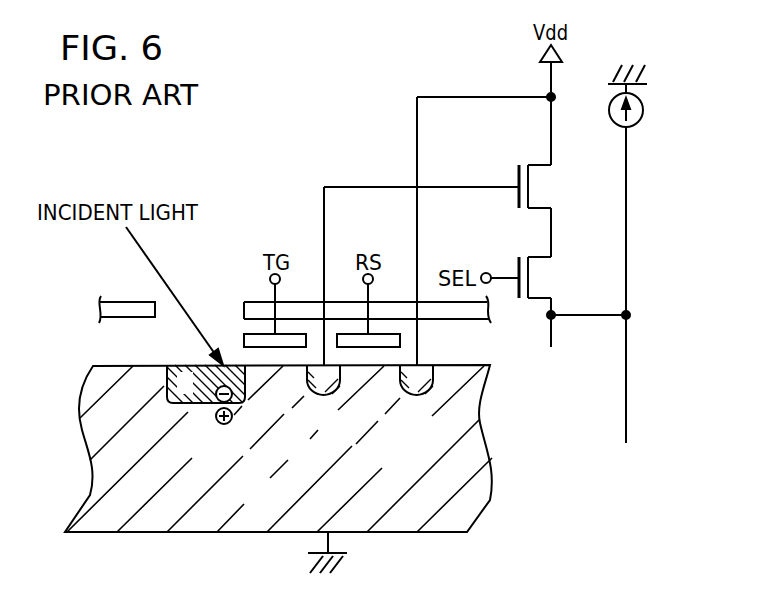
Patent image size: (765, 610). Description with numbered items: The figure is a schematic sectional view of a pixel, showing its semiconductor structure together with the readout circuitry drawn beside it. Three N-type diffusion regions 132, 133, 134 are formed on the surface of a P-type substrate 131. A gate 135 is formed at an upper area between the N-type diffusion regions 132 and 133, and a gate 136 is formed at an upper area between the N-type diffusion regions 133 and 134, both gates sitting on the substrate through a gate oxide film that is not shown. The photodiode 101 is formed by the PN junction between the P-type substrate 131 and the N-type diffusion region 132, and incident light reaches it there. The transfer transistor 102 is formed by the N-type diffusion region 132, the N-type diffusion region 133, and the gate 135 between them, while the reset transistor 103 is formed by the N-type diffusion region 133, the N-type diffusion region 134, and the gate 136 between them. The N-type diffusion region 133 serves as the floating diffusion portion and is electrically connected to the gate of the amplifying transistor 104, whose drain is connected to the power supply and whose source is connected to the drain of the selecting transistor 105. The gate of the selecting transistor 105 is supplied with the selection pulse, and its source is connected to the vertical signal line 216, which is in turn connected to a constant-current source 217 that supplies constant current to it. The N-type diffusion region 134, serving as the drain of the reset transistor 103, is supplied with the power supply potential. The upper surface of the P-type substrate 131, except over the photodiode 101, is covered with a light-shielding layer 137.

The photodiode 101 is at (240, 444).
The transfer transistor 102 is at (285, 408).
The reset transistor 103 is at (375, 408).
The amplifying transistor 104 is at (540, 189).
The selecting transistor 105 is at (540, 278).
The P-type substrate 131 is at (392, 533).
The N-type diffusion region 132 is at (190, 404).
The N-type diffusion region 133 is at (328, 396).
The N-type diffusion region 134 is at (418, 396).
The gate 135 is at (250, 335).
The gate 136 is at (400, 340).
The light-shielding layer 137 is at (126, 307).
The vertical signal line 216 is at (626, 340).
The constant-current source 217 is at (643, 110).